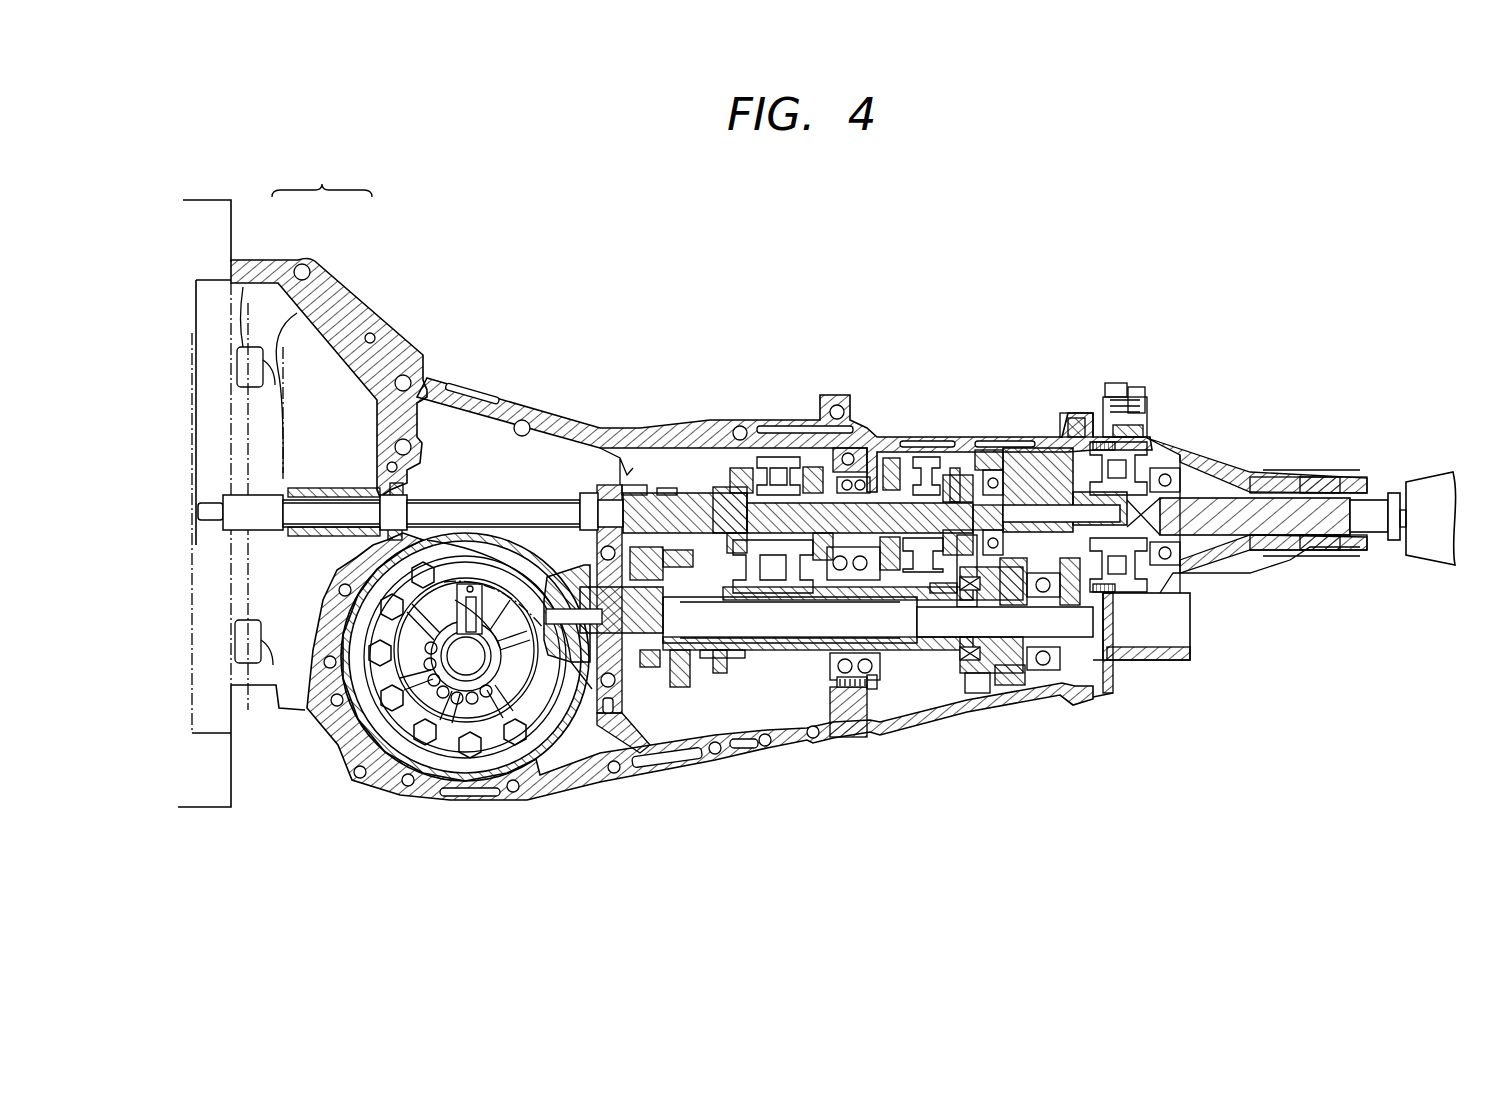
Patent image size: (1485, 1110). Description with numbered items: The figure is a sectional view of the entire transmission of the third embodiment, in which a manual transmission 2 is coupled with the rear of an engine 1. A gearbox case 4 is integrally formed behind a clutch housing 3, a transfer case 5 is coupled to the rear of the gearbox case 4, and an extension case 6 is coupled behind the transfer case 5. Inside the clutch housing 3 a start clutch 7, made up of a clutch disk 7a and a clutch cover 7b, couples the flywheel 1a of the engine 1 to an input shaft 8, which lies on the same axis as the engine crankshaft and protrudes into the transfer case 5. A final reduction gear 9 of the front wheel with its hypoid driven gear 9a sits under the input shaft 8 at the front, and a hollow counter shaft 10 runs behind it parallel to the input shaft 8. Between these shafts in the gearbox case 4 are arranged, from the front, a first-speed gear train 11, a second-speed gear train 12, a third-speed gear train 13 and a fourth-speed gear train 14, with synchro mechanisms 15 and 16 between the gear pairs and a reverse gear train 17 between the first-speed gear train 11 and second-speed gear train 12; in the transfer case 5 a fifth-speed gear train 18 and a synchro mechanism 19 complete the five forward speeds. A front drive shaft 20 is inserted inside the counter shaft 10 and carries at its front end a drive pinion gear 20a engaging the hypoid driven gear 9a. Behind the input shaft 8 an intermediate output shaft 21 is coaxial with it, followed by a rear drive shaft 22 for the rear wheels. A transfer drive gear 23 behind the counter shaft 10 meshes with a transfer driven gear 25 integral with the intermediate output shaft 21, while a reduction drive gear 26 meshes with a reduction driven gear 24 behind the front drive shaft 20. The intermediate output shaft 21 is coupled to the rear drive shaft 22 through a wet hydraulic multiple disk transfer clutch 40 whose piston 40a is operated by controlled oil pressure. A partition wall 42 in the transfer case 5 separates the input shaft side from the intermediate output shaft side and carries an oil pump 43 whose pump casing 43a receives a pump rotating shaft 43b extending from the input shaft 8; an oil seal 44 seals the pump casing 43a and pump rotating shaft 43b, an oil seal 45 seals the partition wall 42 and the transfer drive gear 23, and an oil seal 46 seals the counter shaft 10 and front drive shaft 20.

The engine 1 is at (214, 197).
The flywheel 1a is at (191, 463).
The manual transmission 2 is at (798, 305).
The clutch housing 3 is at (357, 322).
The gearbox case 4 is at (525, 418).
The transfer case 5 is at (1043, 705).
The extension case 6 is at (1250, 455).
The start clutch 7 is at (322, 176).
The clutch disk 7a is at (243, 335).
The clutch cover 7b is at (288, 330).
The input shaft 8 is at (452, 498).
The final reduction gear of front wheel 9 is at (422, 775).
The hypoid driven gear 9a is at (505, 530).
The counter shaft 10 is at (905, 652).
The first-speed gear train 11 is at (643, 478).
The second-speed gear train 12 is at (718, 697).
The third-speed gear train 13 is at (732, 460).
The fourth-speed gear train 14 is at (815, 457).
The synchro mechanism 15 is at (688, 690).
The synchro mechanism 16 is at (778, 457).
The reverse gear train 17 is at (667, 702).
The fifth-speed gear train 18 is at (892, 452).
The synchro mechanism 19 is at (928, 455).
The front drive shaft 20 is at (857, 688).
The drive pinion gear 20a is at (580, 672).
The intermediate output shaft 21 is at (1037, 456).
The rear drive shaft 22 is at (1295, 507).
The transfer drive gear 23 is at (1008, 675).
The reduction driven gear 24 is at (1077, 708).
The transfer driven gear 25 is at (1013, 437).
The reduction drive gear 26 is at (1073, 422).
The transfer clutch 40 is at (1145, 438).
The piston 40a is at (1148, 440).
The partition wall 42 is at (958, 662).
The oil pump 43 is at (968, 478).
The pump casing 43a is at (1003, 452).
The pump rotating shaft 43b is at (940, 642).
The oil seal 44 is at (957, 478).
The oil seal 45 is at (972, 692).
The oil seal 46 is at (1002, 685).